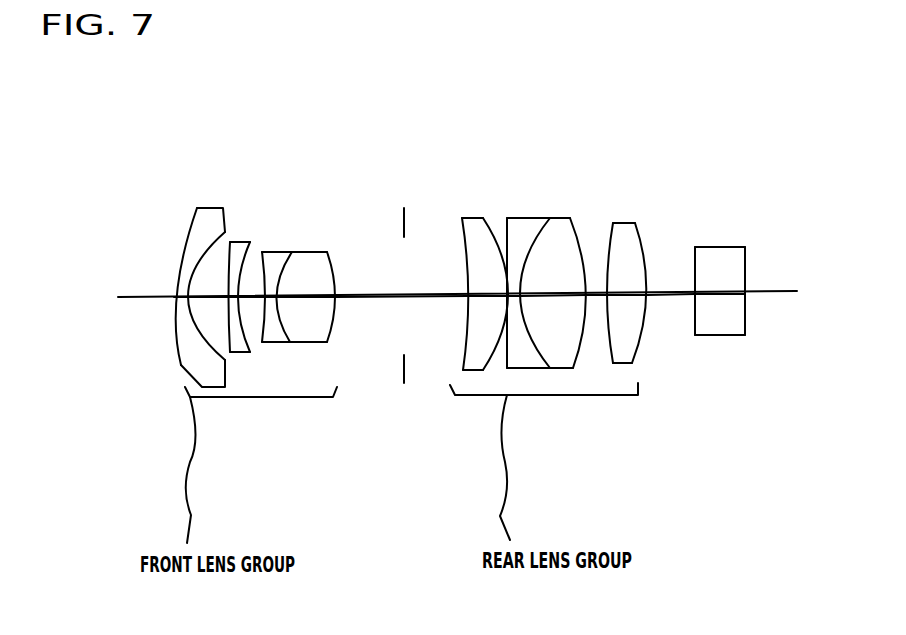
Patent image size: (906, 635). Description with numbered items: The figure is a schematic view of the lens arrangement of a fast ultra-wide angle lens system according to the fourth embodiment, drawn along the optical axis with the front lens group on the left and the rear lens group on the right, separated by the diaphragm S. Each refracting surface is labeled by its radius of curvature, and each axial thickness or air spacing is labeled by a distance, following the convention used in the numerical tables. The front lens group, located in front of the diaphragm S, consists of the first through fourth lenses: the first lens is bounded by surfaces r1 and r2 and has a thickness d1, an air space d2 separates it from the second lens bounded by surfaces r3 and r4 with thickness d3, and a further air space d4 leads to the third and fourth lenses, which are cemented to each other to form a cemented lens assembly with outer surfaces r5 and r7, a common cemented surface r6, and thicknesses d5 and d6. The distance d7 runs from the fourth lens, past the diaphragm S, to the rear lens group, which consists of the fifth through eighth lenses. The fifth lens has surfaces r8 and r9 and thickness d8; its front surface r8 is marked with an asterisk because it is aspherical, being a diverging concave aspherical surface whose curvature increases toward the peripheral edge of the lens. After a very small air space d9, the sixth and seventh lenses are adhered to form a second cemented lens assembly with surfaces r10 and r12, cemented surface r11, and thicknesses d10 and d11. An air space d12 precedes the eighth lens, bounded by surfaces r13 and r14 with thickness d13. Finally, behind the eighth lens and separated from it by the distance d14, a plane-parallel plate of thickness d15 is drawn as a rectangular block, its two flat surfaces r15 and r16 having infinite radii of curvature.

The radius of curvature of first lens surface r1 is at (200, 208).
The radius of curvature of second lens surface r2 is at (223, 208).
The radius of curvature of third lens surface r3 is at (230, 242).
The radius of curvature of fourth lens surface r4 is at (250, 242).
The radius of curvature of fifth lens surface r5 is at (262, 252).
The radius of curvature of sixth lens surface r6 is at (292, 252).
The radius of curvature of seventh lens surface r7 is at (327, 252).
The radius of curvature of eighth lens surface r8 is at (462, 218).
The radius of curvature of ninth lens surface r9 is at (486, 218).
The radius of curvature of tenth lens surface r10 is at (507, 218).
The radius of curvature of eleventh lens surface r11 is at (552, 218).
The radius of curvature of twelfth lens surface r12 is at (570, 218).
The radius of curvature of thirteenth lens surface r13 is at (613, 223).
The radius of curvature of fourteenth lens surface r14 is at (635, 223).
The radius of curvature of fifteenth lens surface r15 is at (695, 248).
The radius of curvature of sixteenth lens surface r16 is at (745, 248).
The diaphragm S is at (402, 221).
The lens thickness of first lens d1 is at (182, 297).
The distance between first and second lenses d2 is at (213, 297).
The lens thickness of second lens d3 is at (235, 297).
The distance between second and third lenses d4 is at (253, 297).
The lens thickness of third lens d5 is at (272, 297).
The lens thickness of fourth lens d6 is at (306, 297).
The distance between fourth and fifth lenses d7 is at (402, 297).
The lens thickness of fifth lens d8 is at (485, 296).
The distance between fifth and sixth lenses d9 is at (509, 296).
The lens thickness of sixth lens d10 is at (515, 296).
The lens thickness of seventh lens d11 is at (550, 296).
The distance between seventh and eighth lenses d12 is at (598, 295).
The lens thickness of eighth lens d13 is at (628, 295).
The distance between eighth lens and plane-parallel plate d14 is at (671, 294).
The thickness of plane-parallel plate d15 is at (719, 294).